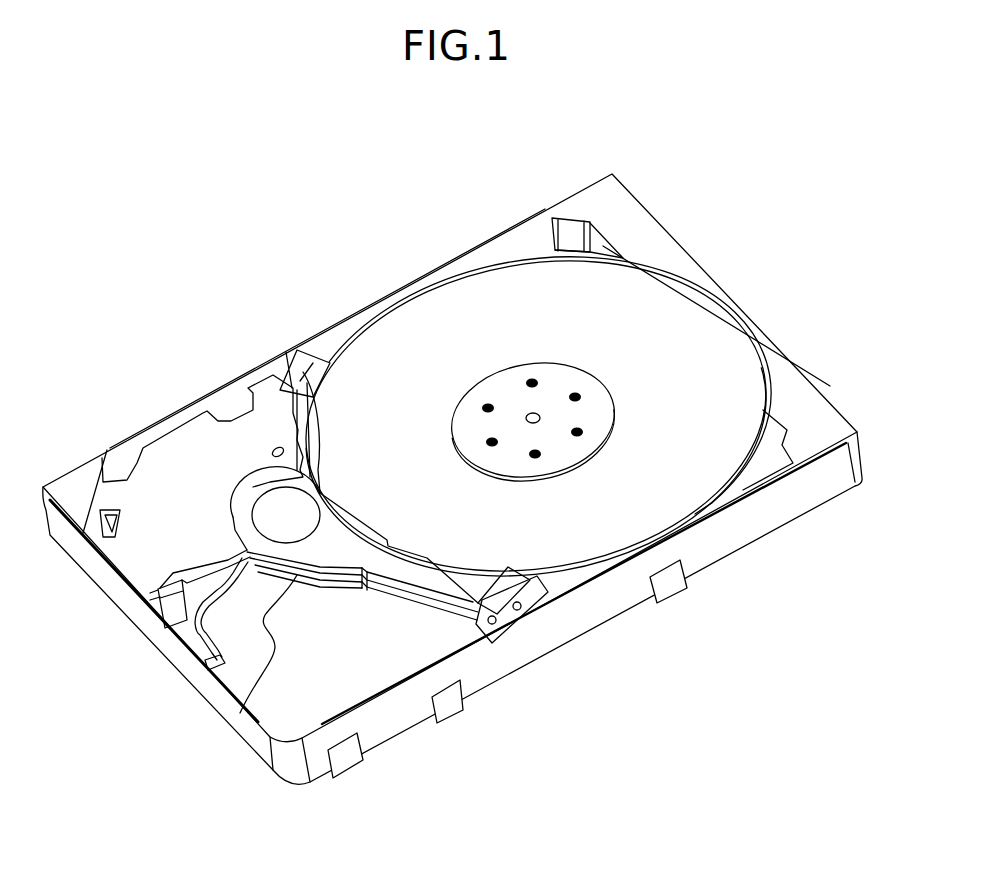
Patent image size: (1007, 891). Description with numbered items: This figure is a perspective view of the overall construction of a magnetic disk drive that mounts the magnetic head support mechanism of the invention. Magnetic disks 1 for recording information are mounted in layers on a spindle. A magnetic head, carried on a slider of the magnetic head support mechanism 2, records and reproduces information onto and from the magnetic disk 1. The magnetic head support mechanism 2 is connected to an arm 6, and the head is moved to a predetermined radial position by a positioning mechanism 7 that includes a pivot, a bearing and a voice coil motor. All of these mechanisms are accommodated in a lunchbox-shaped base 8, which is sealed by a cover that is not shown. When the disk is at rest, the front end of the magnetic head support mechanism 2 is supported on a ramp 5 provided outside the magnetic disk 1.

The magnetic disk 1 is at (452, 310).
The magnetic head support mechanism 2 is at (393, 604).
The ramp 5 is at (540, 577).
The arm 6 is at (318, 547).
The positioning mechanism 7 is at (201, 452).
The base 8 is at (642, 243).